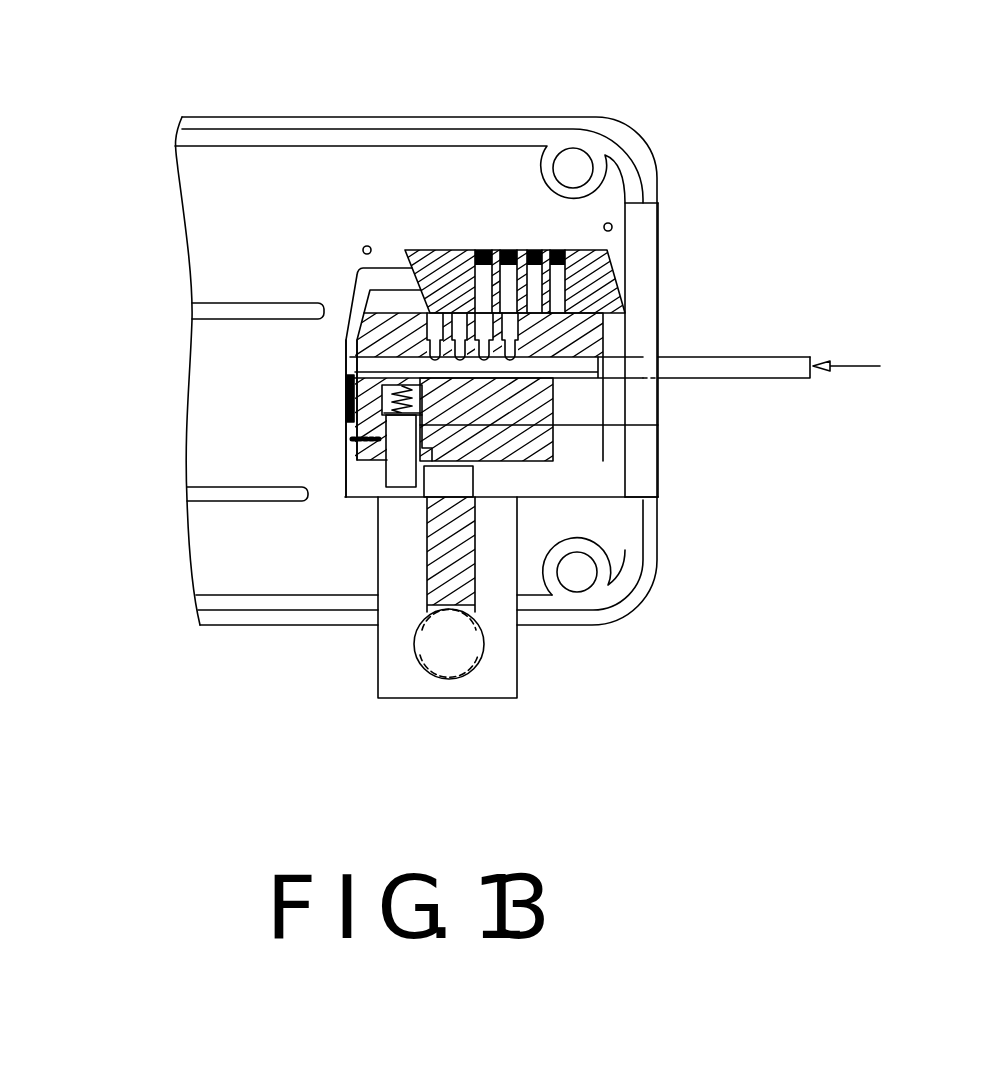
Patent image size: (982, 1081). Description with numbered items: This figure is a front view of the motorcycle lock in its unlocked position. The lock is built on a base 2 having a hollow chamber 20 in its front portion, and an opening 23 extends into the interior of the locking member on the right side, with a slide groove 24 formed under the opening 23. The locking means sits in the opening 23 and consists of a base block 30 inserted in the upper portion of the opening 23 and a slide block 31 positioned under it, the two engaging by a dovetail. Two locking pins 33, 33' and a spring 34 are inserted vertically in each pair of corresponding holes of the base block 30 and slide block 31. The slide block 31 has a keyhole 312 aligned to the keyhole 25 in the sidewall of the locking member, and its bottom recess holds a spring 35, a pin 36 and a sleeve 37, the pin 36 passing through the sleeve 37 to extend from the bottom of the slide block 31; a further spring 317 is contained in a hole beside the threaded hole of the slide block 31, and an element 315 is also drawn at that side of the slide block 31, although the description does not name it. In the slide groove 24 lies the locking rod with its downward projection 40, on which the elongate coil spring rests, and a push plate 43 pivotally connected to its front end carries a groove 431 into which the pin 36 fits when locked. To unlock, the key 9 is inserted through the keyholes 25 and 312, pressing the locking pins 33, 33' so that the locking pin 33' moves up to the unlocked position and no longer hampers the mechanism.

The base 2 is at (281, 117).
The hollow chamber 20 is at (232, 168).
The opening 23 is at (353, 290).
The locking pin 33' is at (499, 167).
The spring 34 is at (480, 267).
The base block 30 is at (585, 265).
The locking pin 33 is at (590, 304).
The keyhole 25 is at (647, 356).
The key 9 is at (785, 360).
The slide block 31 is at (353, 342).
The spring 35 is at (385, 400).
The spring 317 is at (350, 403).
The retainer 315 is at (377, 440).
The pin 36 is at (407, 468).
The keyhole 312 is at (550, 400).
The sleeve 37 is at (610, 425).
The groove 431 is at (458, 482).
The push plate 43 is at (457, 540).
The slide groove 24 is at (473, 593).
The downward projection 40 is at (457, 648).